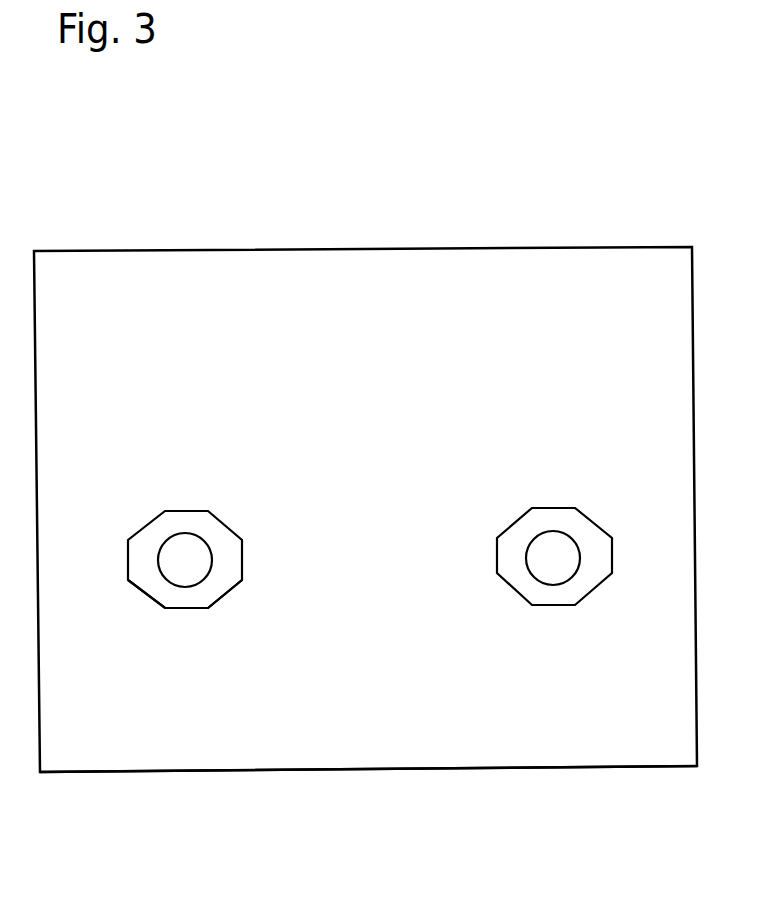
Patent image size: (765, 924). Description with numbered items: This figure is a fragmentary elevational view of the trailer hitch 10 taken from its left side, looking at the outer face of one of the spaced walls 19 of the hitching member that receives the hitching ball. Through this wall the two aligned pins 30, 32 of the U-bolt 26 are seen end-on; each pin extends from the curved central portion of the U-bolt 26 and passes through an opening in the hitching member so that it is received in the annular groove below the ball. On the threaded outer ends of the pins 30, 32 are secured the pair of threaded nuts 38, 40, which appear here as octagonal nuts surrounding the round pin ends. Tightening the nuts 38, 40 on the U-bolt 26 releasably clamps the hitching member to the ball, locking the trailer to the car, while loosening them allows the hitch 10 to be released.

The trailer hitch 10 is at (347, 195).
The spaced wall 19 is at (215, 770).
The U-bolt 26 is at (229, 527).
The pin 30 is at (167, 538).
The threaded nut 38 is at (183, 610).
The pin 32 is at (535, 530).
The threaded nut 40 is at (547, 607).